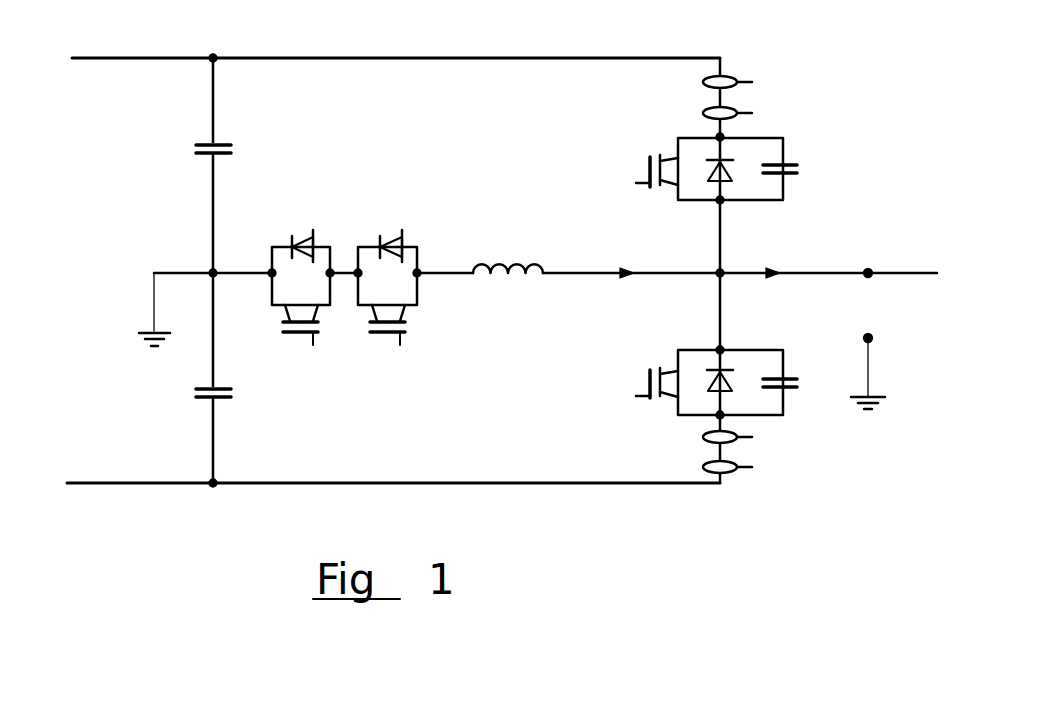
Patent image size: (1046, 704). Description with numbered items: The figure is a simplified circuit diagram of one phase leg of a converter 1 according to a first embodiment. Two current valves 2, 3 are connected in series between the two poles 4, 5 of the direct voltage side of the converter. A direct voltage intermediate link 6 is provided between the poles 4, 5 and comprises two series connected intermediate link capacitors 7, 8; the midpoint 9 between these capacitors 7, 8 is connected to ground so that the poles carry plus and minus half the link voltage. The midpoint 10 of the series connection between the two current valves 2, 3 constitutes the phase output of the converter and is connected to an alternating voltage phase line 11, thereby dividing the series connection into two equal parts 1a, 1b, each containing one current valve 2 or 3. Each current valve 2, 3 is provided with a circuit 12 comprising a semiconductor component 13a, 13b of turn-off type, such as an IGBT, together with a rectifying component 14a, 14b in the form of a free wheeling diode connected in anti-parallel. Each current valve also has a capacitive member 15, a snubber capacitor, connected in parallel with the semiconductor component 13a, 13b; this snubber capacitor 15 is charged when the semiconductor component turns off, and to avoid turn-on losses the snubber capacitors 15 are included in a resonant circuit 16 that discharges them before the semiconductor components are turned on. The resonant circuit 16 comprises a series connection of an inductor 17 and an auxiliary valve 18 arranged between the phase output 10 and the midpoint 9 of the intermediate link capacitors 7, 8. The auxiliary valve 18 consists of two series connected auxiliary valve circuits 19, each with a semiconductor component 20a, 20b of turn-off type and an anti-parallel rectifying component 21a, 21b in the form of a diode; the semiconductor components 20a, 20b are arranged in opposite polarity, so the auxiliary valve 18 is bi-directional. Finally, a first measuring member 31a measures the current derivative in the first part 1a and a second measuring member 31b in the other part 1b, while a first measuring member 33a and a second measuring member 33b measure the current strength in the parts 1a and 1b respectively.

The converter 1 is at (734, 269).
The first part of the series connection of current valves 1a is at (718, 64).
The second part of the series connection of current valves 1b is at (725, 478).
The current valve 2 is at (731, 251).
The current valve 3 is at (699, 349).
The pole 4 is at (139, 58).
The pole 5 is at (110, 483).
The direct voltage intermediate link 6 is at (170, 270).
The intermediate link capacitor 7 is at (204, 142).
The intermediate link capacitor 8 is at (204, 404).
The midpoint 9 is at (210, 270).
The midpoint 10 is at (712, 285).
The alternating voltage phase line 11 is at (892, 270).
The circuit 12 is at (688, 207).
The semiconductor component of turn-off type 13a is at (634, 173).
The semiconductor component of turn-off type 13b is at (636, 392).
The rectifying component 14a is at (732, 170).
The rectifying component 14b is at (736, 367).
The capacitive member 15 is at (798, 180).
The resonant circuit 16 is at (387, 316).
The inductor 17 is at (480, 304).
The auxiliary valve 18 is at (387, 301).
The auxiliary valve circuit 19 is at (360, 286).
The semiconductor component of turn-off type 20a is at (395, 287).
The semiconductor component of turn-off type 20b is at (301, 285).
The rectifying component 21a is at (391, 238).
The rectifying component 21b is at (304, 237).
The first measuring member 31a is at (748, 112).
The second measuring member 31b is at (747, 440).
The first measuring member 33a is at (740, 76).
The second measuring member 33b is at (734, 476).